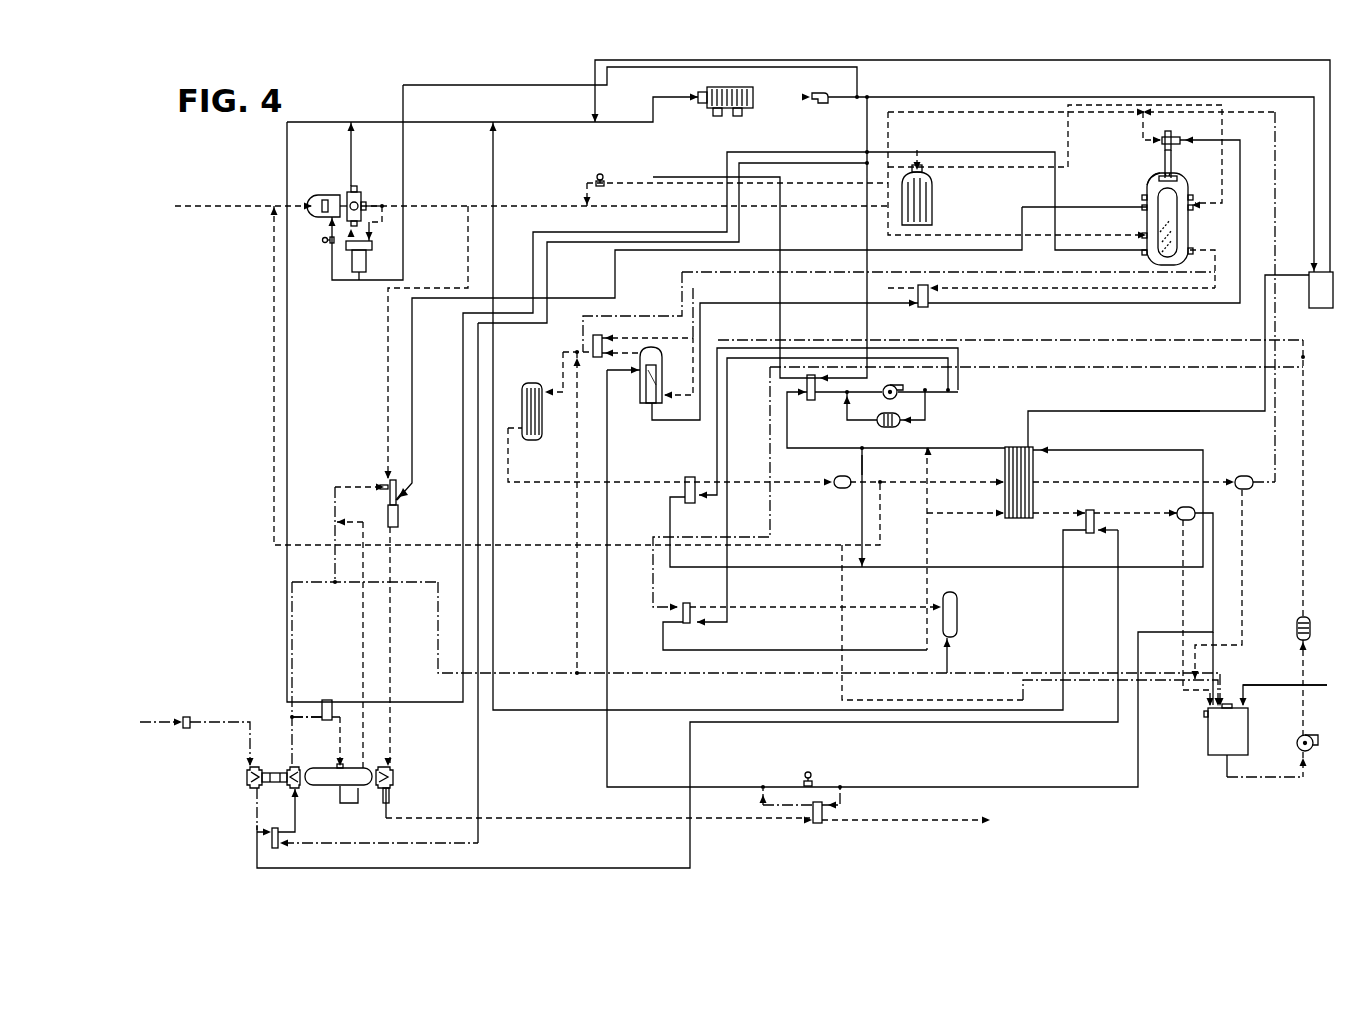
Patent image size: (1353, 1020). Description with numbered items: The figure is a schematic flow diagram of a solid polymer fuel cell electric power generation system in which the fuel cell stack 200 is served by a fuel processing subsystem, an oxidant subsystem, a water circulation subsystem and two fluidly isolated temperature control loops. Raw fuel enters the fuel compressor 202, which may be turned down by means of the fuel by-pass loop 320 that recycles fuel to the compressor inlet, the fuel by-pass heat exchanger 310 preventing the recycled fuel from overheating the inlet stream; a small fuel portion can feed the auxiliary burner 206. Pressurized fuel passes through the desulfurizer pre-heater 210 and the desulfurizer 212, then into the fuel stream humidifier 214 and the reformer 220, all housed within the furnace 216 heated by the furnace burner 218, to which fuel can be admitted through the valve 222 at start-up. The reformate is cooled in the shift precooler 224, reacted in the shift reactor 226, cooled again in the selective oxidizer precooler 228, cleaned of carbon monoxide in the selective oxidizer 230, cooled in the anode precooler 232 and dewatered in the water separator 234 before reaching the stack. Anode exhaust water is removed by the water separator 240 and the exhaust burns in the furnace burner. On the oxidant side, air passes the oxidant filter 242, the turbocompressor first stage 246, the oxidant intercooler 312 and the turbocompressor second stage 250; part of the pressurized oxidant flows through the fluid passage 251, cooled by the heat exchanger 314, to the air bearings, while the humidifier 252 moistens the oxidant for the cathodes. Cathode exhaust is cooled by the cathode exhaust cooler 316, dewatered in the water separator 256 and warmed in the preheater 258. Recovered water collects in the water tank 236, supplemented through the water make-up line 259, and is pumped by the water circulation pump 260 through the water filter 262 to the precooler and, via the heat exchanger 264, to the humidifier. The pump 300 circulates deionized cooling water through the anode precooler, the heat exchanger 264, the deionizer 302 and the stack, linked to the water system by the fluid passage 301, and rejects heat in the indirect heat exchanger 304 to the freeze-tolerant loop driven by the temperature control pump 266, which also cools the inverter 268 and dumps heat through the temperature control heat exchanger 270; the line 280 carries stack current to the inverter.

The fuel cell stack 200 is at (1015, 445).
The fuel compressor 202 is at (347, 186).
The auxiliary burner 206 is at (400, 522).
The desulfurizer pre-heater 210 is at (1173, 237).
The desulfurizer 212 is at (930, 178).
The fuel stream humidifier 214 is at (1170, 213).
The furnace 216 is at (1150, 178).
The furnace burner 218 is at (1160, 145).
The reformer 220 is at (1205, 168).
The valve 222 is at (598, 175).
The shift precooler 224 is at (922, 307).
The shift reactor 226 is at (643, 403).
The selective oxidizer precooler 228 is at (593, 350).
The selective oxidizer 230 is at (528, 383).
The anode precooler 232 is at (690, 503).
The water separator 234 is at (838, 489).
The water tank 236 is at (1213, 757).
The water separator 240 is at (1245, 490).
The oxidant filter 242 is at (186, 717).
The turbocompressor first stage 246 is at (247, 780).
The turbocompressor second stage 250 is at (292, 767).
The fluid passage 251 is at (303, 716).
The humidifier 252 is at (958, 612).
The water separator 256 is at (1180, 512).
The preheater 258 is at (822, 823).
The water make-up line 259 is at (1248, 689).
The water circulation pump 260 is at (1300, 745).
The water filter 262 is at (1300, 617).
The heat exchanger 264 is at (686, 623).
The temperature control pump 266 is at (818, 104).
The inverter 268 is at (1320, 310).
The temperature control heat exchanger 270 is at (710, 108).
The line 280 is at (1125, 410).
The pump 300 is at (905, 398).
The fluid passage 301 is at (862, 475).
The deionizer 302 is at (878, 424).
The indirect heat exchanger 304 is at (806, 380).
The fuel by-pass heat exchanger 310 is at (372, 246).
The oxidant intercooler 312 is at (272, 838).
The heat exchanger 314 is at (332, 700).
The cathode exhaust cooler 316 is at (1090, 534).
The fuel by-pass loop 320 is at (360, 276).